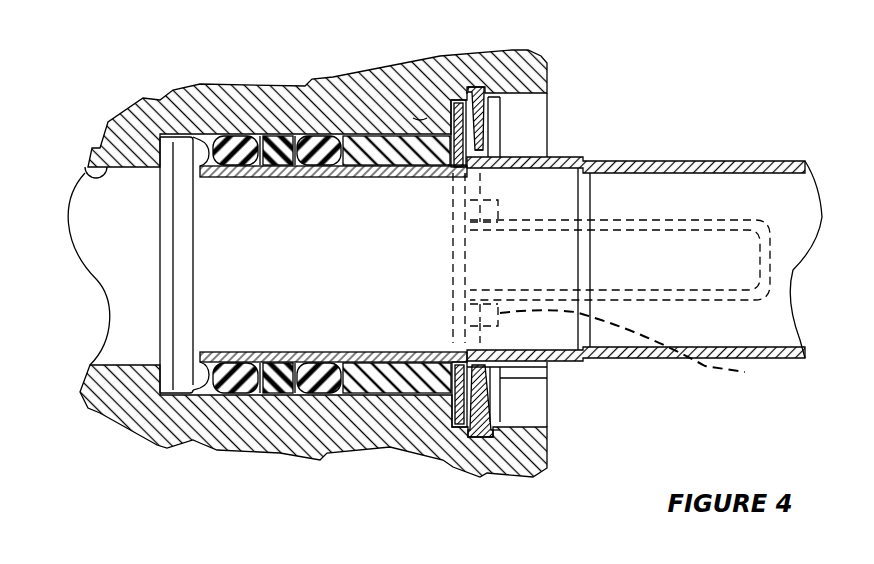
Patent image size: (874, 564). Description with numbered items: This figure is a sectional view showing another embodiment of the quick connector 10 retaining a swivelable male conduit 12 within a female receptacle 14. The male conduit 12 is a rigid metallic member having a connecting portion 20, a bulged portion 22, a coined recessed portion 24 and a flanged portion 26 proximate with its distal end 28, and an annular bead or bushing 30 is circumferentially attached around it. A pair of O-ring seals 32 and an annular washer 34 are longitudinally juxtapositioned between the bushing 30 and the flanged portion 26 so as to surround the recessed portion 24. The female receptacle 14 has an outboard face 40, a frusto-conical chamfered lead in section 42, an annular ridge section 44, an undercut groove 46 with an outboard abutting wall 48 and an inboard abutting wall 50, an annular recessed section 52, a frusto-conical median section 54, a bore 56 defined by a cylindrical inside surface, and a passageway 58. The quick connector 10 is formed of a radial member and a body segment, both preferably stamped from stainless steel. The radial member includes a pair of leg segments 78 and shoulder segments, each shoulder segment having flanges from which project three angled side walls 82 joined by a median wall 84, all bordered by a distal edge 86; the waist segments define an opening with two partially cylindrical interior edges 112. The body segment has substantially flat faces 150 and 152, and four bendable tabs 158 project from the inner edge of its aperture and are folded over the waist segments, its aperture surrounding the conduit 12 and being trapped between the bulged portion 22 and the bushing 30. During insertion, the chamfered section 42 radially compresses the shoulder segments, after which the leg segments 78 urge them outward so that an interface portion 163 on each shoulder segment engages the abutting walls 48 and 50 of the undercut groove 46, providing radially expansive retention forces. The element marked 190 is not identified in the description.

The quick connector 10 is at (510, 393).
The male conduit 12 is at (679, 382).
The female receptacle 14 is at (95, 447).
The connecting portion 20 is at (672, 158).
The bulged portion 22 is at (561, 154).
The coined recessed portion 24 is at (341, 352).
The flanged portion 26 is at (186, 385).
The distal end 28 is at (165, 267).
The bushing 30 is at (372, 136).
The O-ring seals 32 is at (237, 372).
The annular washer 34 is at (268, 372).
The outboard face 40 is at (547, 63).
The frusto-conical chamfered lead in section 42 is at (533, 95).
The annular ridge section 44 is at (520, 86).
The undercut groove 46 is at (485, 438).
The outboard abutting wall 48 is at (508, 437).
The inboard abutting wall 50 is at (468, 436).
The annular recessed section 52 is at (451, 101).
The frusto-conical median section 54 is at (423, 111).
The bore 56 is at (218, 395).
The passageway 58 is at (84, 167).
The leg segments 78 is at (700, 218).
The angled side walls 82 is at (490, 410).
The median wall 84 is at (498, 428).
The distal edge 86 is at (466, 94).
The partially cylindrical interior edges 112 is at (483, 150).
The flat face 150 is at (470, 373).
The flat face 152 is at (452, 399).
The bendable tabs 158 is at (639, 345).
The interface portion 163 is at (488, 88).
The ring junction 190 is at (448, 171).